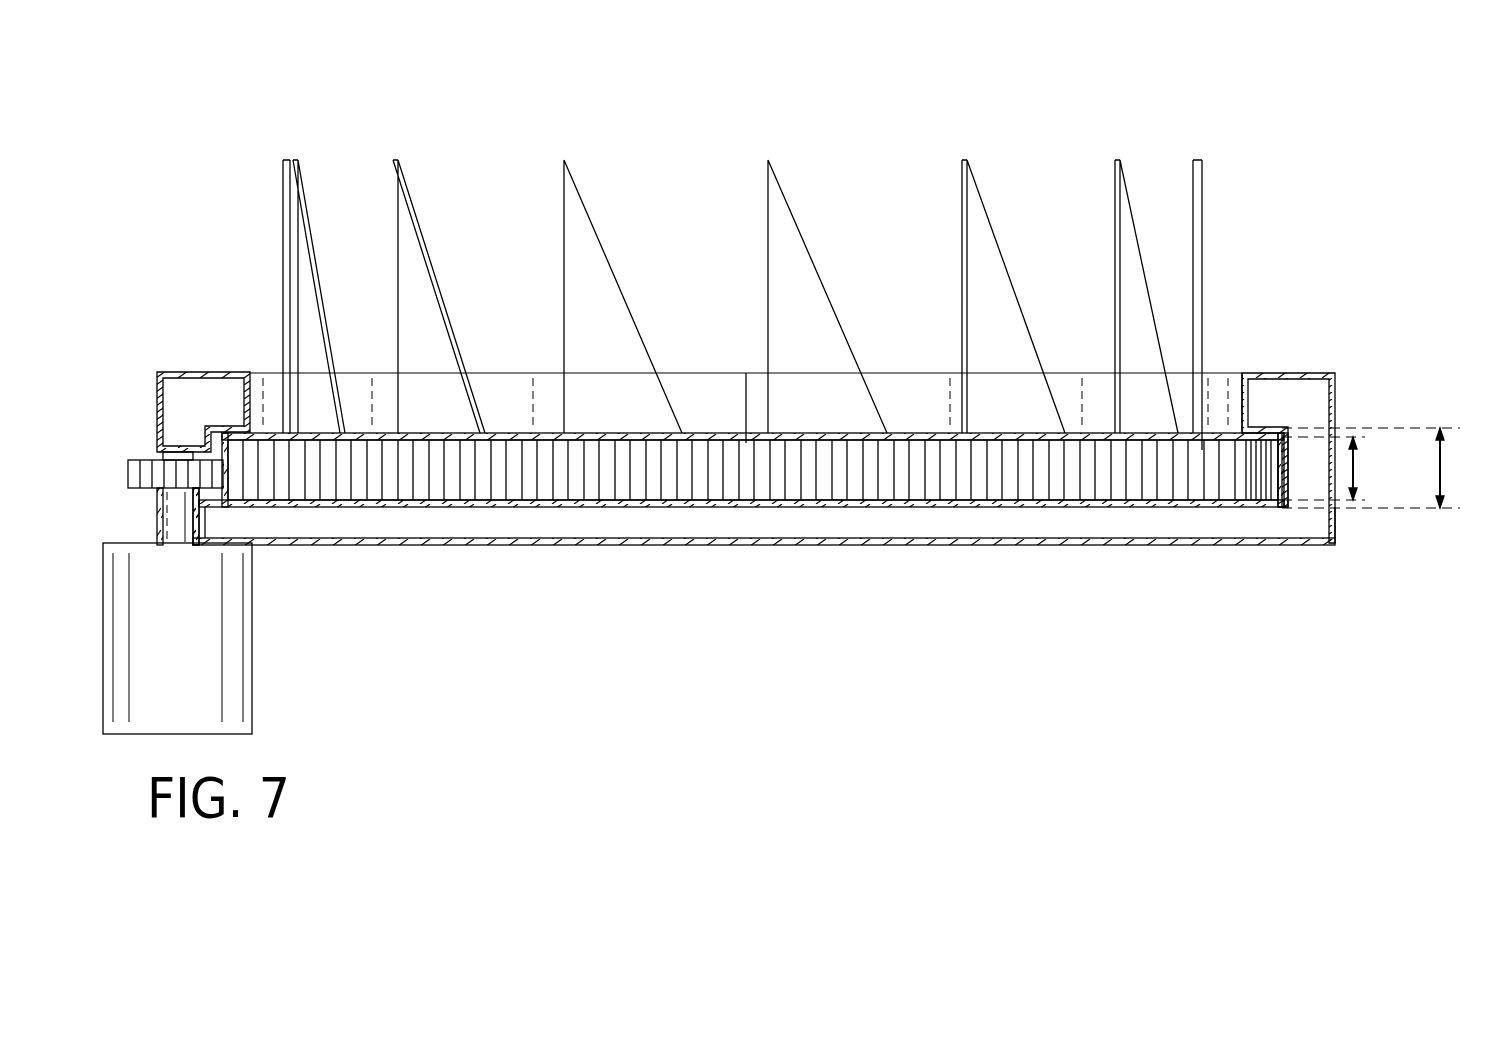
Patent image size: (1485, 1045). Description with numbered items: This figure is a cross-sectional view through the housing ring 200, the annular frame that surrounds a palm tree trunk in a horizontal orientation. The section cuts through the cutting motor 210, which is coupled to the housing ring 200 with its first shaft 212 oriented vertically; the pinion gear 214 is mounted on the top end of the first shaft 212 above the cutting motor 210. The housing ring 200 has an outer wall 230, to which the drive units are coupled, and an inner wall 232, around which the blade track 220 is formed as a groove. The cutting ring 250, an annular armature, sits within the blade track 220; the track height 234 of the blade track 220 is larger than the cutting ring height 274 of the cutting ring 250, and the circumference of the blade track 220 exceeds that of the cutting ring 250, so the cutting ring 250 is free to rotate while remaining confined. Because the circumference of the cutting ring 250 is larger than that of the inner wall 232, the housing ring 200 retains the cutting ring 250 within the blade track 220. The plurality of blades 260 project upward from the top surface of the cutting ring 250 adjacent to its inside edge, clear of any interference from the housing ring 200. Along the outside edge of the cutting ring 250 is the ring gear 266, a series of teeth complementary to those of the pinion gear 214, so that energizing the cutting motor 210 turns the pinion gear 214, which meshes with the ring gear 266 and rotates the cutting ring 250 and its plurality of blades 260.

The housing ring 200 is at (695, 520).
The cutting motor 210 is at (245, 686).
The first shaft 212 is at (175, 523).
The pinion gear 214 is at (126, 470).
The blade track 220 is at (1285, 478).
The outer wall 230 is at (1288, 418).
The inner wall 232 is at (1243, 398).
The track height 234 is at (1443, 470).
The cutting ring 250 is at (512, 397).
The plurality of blades 260 is at (565, 160).
The ring gear 266 is at (523, 492).
The cutting ring height 274 is at (1356, 470).